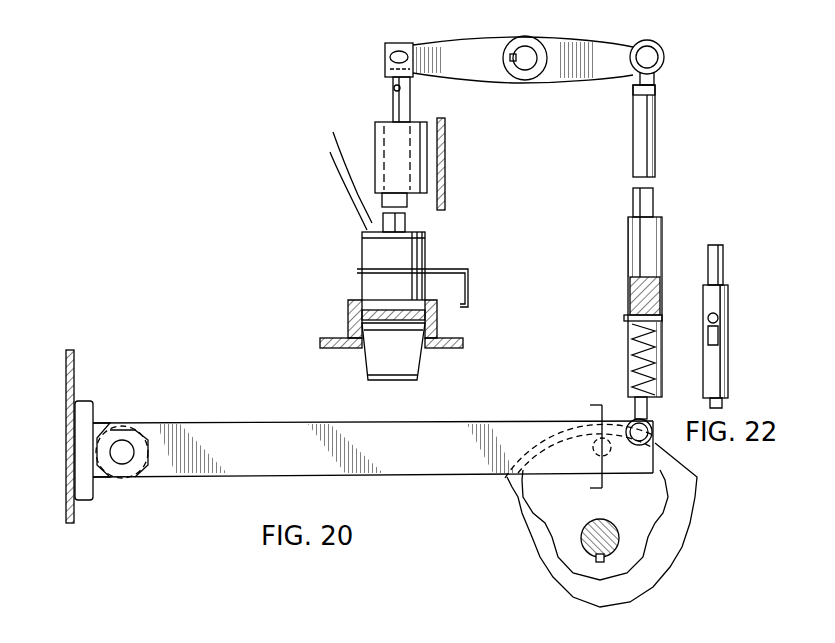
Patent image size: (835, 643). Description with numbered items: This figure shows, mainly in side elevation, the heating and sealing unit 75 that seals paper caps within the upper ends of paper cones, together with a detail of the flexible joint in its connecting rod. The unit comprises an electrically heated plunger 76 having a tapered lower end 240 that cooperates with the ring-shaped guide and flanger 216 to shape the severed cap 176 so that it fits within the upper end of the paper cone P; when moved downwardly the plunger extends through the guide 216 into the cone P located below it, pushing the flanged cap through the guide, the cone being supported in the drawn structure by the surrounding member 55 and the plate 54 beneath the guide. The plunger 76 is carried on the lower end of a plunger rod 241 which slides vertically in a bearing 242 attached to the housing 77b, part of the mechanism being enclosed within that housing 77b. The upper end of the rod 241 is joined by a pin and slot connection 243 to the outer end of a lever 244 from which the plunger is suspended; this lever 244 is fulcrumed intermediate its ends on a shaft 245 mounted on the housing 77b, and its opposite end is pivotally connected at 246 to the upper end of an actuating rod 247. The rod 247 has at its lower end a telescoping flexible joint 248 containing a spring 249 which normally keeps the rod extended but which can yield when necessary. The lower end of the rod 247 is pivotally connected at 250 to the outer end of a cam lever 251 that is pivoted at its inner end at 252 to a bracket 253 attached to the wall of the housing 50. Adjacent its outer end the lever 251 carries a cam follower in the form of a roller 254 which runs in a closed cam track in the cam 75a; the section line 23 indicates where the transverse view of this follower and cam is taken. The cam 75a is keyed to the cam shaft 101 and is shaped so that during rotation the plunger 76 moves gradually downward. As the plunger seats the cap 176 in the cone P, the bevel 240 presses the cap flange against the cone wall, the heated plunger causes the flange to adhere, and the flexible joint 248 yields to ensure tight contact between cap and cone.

In FIG. 20, the housing 50 is at (66, 400).
In FIG. 20, the flange plate 54 is at (442, 350).
In FIG. 20, the housing 55 is at (350, 325).
In FIG. 20, the plunger 76 is at (372, 256).
In FIG. 20, the heating and sealing unit 75 is at (657, 157).
In FIG. 20, the cam 75a is at (523, 528).
In FIG. 20, the housing 77b is at (445, 143).
In FIG. 20, the cam shaft 101 is at (608, 525).
In FIG. 20, the severed cap 176 is at (390, 331).
In FIG. 20, the guide and flanger 216 is at (435, 268).
In FIG. 20, the section line 23 is at (576, 446).
In FIG. 20, the tapered lower end 240 is at (375, 302).
In FIG. 20, the plunger rod 241 is at (388, 223).
In FIG. 20, the bearing 242 is at (380, 150).
In FIG. 20, the pin and slot connection 243 is at (394, 52).
In FIG. 20, the lever 244 is at (455, 48).
In FIG. 20, the shaft 245 is at (533, 55).
In FIG. 20, the pivotal connection 246 is at (652, 55).
In FIG. 20, the actuating rod 247 is at (640, 153).
In FIG. 22, the actuating rod 247 is at (712, 262).
In FIG. 20, the telescoping flexible joint 248 is at (628, 338).
In FIG. 22, the telescoping flexible joint 248 is at (727, 348).
In FIG. 20, the spring 249 is at (628, 365).
In FIG. 20, the pivotal connection 250 is at (650, 425).
In FIG. 20, the cam lever 251 is at (412, 433).
In FIG. 20, the pivot 252 is at (126, 441).
In FIG. 20, the bracket 253 is at (88, 410).
In FIG. 20, the cam follower roller 254 is at (600, 443).
In FIG. 20, the paper cone P is at (372, 364).